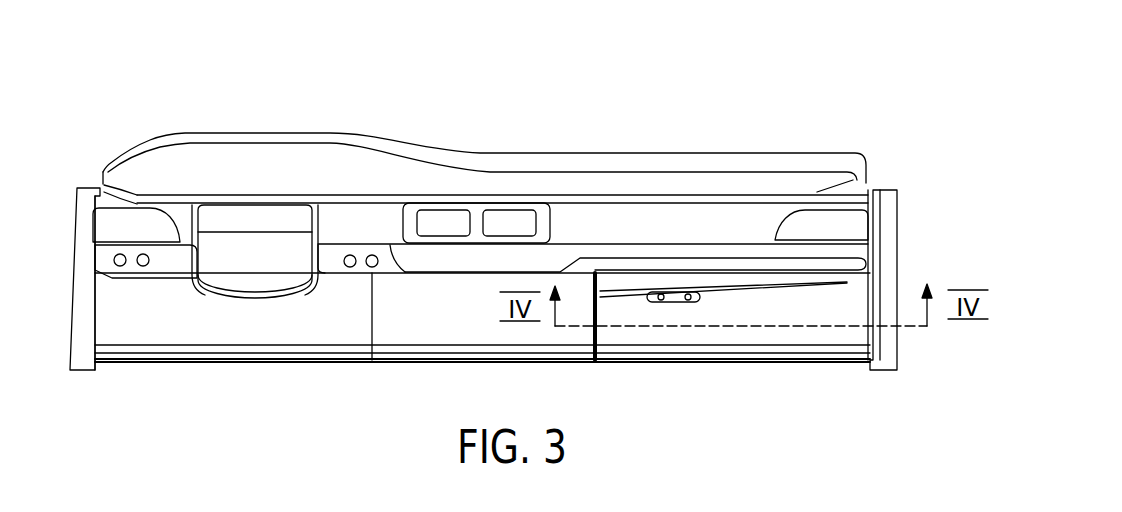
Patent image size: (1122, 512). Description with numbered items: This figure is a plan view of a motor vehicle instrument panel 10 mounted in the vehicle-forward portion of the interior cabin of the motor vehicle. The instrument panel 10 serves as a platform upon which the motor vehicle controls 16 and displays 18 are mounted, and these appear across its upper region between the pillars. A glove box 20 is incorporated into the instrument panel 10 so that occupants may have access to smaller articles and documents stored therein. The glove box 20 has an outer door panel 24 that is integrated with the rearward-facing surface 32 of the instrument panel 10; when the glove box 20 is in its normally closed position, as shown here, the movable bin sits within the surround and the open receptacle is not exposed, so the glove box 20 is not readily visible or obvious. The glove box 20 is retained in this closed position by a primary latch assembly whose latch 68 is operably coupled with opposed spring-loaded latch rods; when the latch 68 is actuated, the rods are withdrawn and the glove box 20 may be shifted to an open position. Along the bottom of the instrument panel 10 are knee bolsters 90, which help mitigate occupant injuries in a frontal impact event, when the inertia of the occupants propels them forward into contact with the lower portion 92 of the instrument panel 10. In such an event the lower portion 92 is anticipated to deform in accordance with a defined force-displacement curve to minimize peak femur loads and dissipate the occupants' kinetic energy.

The motor vehicle instrument panel 10 is at (508, 182).
The motor vehicle controls 16 is at (143, 253).
The displays 18 is at (250, 252).
The glove box 20 is at (641, 347).
The outer door panel 24 is at (830, 337).
The rearward-facing surface 32 is at (622, 220).
The latch 68 is at (679, 291).
The knee bolsters 90 is at (180, 330).
The lower portion 92 is at (324, 347).